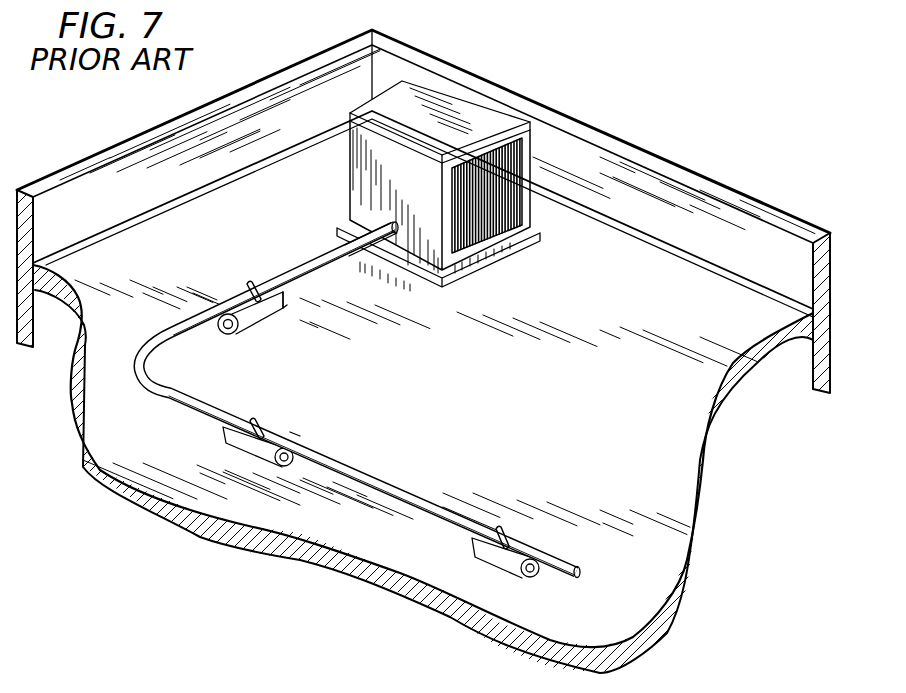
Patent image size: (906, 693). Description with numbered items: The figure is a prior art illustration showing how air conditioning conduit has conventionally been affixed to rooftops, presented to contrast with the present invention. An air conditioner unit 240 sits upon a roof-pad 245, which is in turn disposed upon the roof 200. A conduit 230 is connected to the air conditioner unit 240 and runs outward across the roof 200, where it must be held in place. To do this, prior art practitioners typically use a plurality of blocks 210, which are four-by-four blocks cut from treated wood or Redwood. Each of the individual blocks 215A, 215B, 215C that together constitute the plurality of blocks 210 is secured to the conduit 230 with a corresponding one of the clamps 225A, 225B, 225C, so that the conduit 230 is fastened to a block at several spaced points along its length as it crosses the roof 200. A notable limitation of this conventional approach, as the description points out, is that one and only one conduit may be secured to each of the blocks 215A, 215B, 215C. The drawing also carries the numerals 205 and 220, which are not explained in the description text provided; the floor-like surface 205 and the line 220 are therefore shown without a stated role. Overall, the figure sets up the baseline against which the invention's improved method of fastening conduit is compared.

The roof 200 is at (658, 148).
The floor 205 is at (688, 485).
The plurality of blocks 210 is at (283, 320).
The block 215A is at (250, 330).
The block 215B is at (227, 447).
The block 215C is at (537, 573).
The sampling line 220 is at (290, 430).
The clamp 225A is at (257, 290).
The clamp 225B is at (260, 420).
The clamp 225C is at (507, 533).
The conduit 230 is at (335, 260).
The air conditioner unit 240 is at (345, 213).
The roof-pad 245 is at (560, 250).